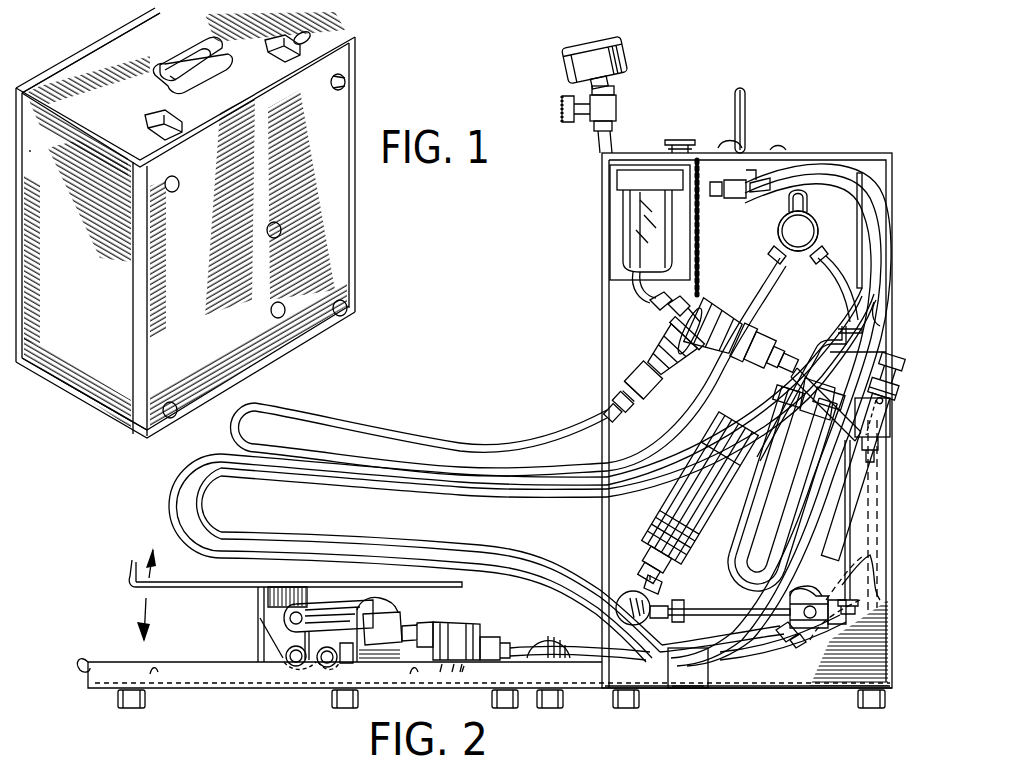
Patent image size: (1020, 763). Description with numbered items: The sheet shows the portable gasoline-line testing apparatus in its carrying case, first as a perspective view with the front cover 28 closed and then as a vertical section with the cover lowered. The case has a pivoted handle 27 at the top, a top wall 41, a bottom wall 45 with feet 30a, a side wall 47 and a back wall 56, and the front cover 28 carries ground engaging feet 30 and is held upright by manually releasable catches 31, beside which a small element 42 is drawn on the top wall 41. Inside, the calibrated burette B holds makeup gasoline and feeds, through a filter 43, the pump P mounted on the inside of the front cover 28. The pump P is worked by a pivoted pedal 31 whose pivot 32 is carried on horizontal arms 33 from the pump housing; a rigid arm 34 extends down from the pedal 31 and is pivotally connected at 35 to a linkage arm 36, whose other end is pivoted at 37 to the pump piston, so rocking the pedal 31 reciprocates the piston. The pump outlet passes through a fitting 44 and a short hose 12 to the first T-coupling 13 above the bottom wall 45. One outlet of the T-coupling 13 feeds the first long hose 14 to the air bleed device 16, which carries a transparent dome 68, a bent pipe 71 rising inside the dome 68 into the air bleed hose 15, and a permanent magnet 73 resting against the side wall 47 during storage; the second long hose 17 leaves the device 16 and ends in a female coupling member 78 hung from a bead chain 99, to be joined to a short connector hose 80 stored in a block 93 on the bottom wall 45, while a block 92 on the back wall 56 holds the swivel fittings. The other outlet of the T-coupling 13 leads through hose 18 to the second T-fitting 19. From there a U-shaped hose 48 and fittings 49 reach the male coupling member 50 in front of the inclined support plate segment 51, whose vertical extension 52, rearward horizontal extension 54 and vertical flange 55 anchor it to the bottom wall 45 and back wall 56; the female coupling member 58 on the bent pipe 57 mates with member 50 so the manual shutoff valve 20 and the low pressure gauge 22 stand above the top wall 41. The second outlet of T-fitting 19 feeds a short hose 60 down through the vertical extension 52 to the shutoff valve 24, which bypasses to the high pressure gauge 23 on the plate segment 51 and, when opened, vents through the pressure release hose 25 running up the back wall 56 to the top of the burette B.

In FIG. 2, the short hose 12 is at (560, 660).
In FIG. 2, the first T-coupling 13 is at (824, 596).
In FIG. 2, the first long flexible hose 14 is at (748, 680).
In FIG. 2, the air bleed hose 15 is at (532, 572).
In FIG. 2, the air bleed device 16 is at (780, 236).
In FIG. 2, the second long flexible hose 17 is at (440, 436).
In FIG. 2, the short hose 18 is at (843, 566).
In FIG. 2, the second T-fitting 19 is at (820, 492).
In FIG. 2, the manual shutoff valve 20 is at (618, 122).
In FIG. 2, the low pressure gauge 22 is at (626, 50).
In FIG. 2, the high pressure gauge 23 is at (716, 496).
In FIG. 2, the manual shutoff valve 24 is at (630, 596).
In FIG. 2, the pressure release hose 25 is at (862, 166).
In FIG. 1, the pivoted handle 27 is at (190, 32).
In FIG. 2, the pivoted handle 27 is at (728, 100).
In FIG. 1, the front cover 28 is at (355, 225).
In FIG. 2, the front cover 28 is at (205, 690).
In FIG. 1, the ground engaging feet 30 is at (172, 186).
In FIG. 2, the ground engaging feet 30 is at (120, 706).
In FIG. 2, the feet 30a is at (628, 708).
In FIG. 1, the catches / pedal 31 is at (272, 54).
In FIG. 2, the catches / pedal 31 is at (184, 584).
In FIG. 2, the pivot 32 is at (284, 616).
In FIG. 2, the horizontal arms 33 is at (314, 602).
In FIG. 2, the rigid arm 34 is at (258, 600).
In FIG. 2, the pivot connection 35 is at (284, 654).
In FIG. 2, the linkage arm 36 is at (302, 660).
In FIG. 2, the pivot connection 37 is at (330, 664).
In FIG. 1, the top wall 41 is at (80, 62).
In FIG. 2, the top wall 41 is at (766, 150).
In FIG. 1, the knob 42 is at (298, 38).
In FIG. 2, the filter 43 is at (528, 632).
In FIG. 2, the fitting 44 is at (382, 612).
In FIG. 1, the bottom wall 45 is at (68, 386).
In FIG. 2, the bottom wall 45 is at (722, 690).
In FIG. 1, the side wall 47 is at (88, 294).
In FIG. 2, the side wall 47 is at (802, 753).
In FIG. 2, the U-shaped hose 48 is at (742, 574).
In FIG. 2, the fittings 49 is at (860, 352).
In FIG. 2, the male coupling member 50 is at (754, 362).
In FIG. 2, the inclined support plate segment 51 is at (776, 403).
In FIG. 2, the vertical extension 52 is at (671, 582).
In FIG. 2, the rearward horizontal extension 54 is at (830, 334).
In FIG. 2, the vertical flange 55 is at (880, 312).
In FIG. 2, the back wall 56 is at (878, 524).
In FIG. 2, the bent pipe 57 is at (640, 288).
In FIG. 2, the female coupling member 58 is at (733, 340).
In FIG. 2, the short flexible hose 60 is at (780, 582).
In FIG. 2, the transparent dome 68 is at (812, 208).
In FIG. 2, the bent pipe 71 is at (794, 256).
In FIG. 2, the permanent magnet 73 is at (812, 184).
In FIG. 2, the female coupling member 78 is at (652, 354).
In FIG. 2, the connector hose 80 is at (748, 618).
In FIG. 2, the block 92 is at (880, 404).
In FIG. 2, the block 93 is at (700, 679).
In FIG. 2, the bead chain 99 is at (703, 252).
In FIG. 2, the burette B is at (616, 240).
In FIG. 2, the pump P is at (410, 647).